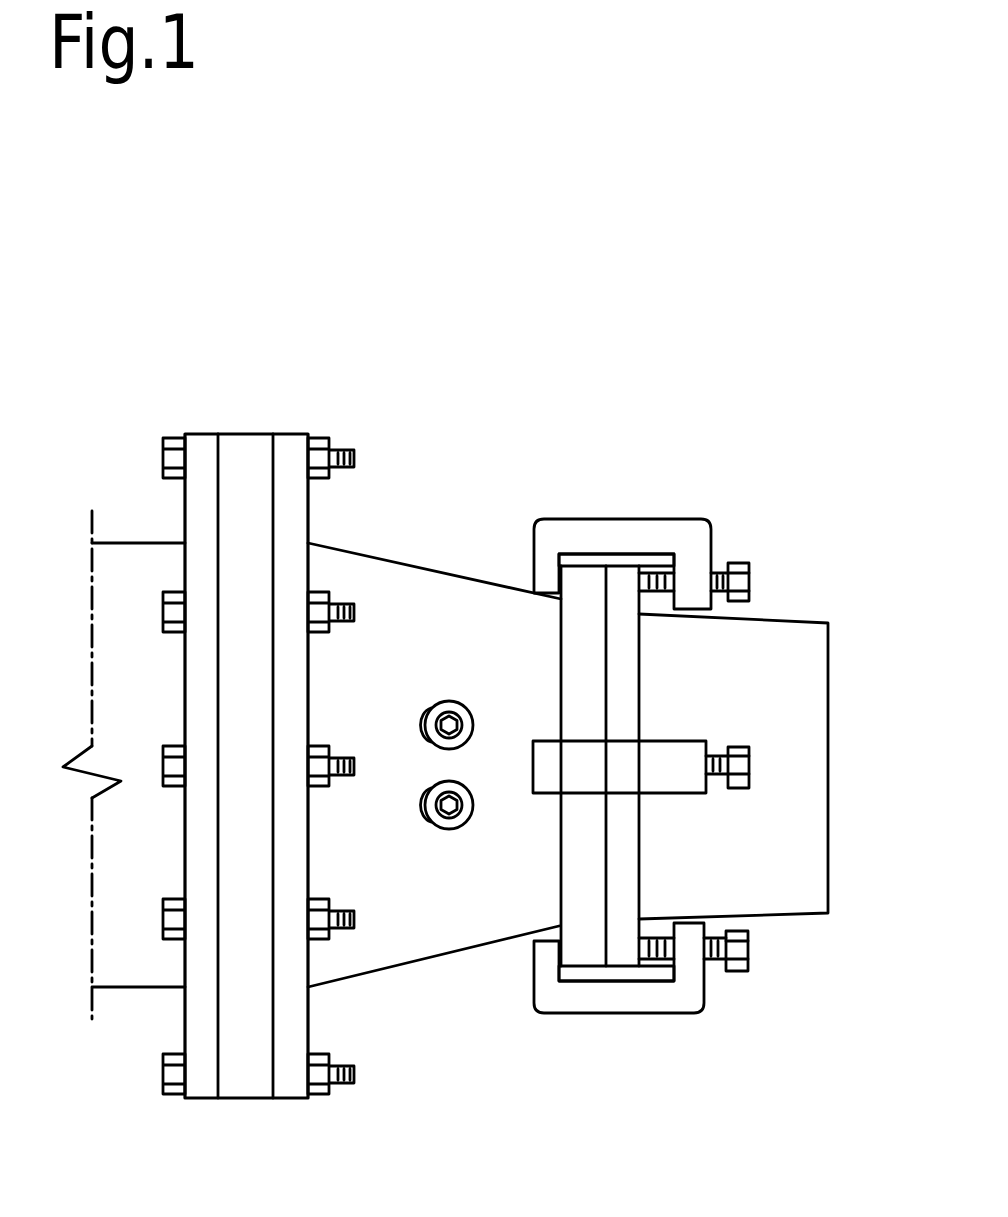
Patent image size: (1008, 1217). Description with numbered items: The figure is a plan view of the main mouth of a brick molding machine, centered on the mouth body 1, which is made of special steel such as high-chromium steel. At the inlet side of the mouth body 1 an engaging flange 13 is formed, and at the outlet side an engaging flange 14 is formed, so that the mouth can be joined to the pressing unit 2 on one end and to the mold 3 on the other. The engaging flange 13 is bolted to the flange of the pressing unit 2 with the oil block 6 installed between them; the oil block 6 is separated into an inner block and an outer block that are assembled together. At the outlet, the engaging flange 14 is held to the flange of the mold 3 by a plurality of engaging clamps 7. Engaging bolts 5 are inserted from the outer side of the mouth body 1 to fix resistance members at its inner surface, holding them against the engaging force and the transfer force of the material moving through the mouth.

The mouth body 1 is at (423, 562).
The pressing unit 2 is at (120, 558).
The mold 3 is at (785, 613).
The engaging bolt 5 is at (445, 698).
The oil block 6 is at (247, 434).
The engaging clamp 7 is at (637, 530).
The engaging flange 13 is at (287, 452).
The engaging flange 14 is at (572, 850).